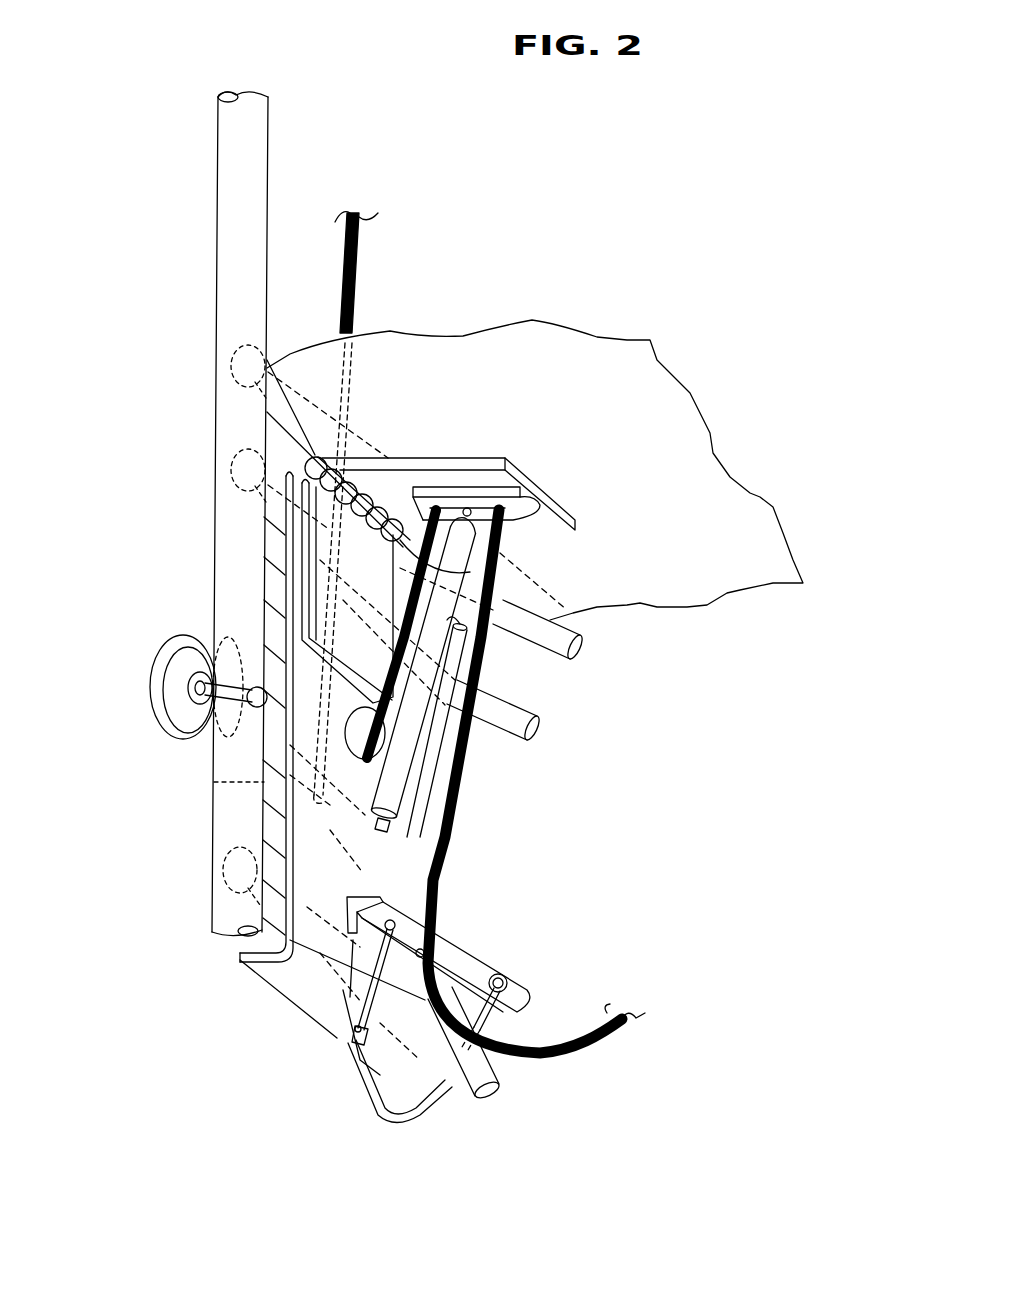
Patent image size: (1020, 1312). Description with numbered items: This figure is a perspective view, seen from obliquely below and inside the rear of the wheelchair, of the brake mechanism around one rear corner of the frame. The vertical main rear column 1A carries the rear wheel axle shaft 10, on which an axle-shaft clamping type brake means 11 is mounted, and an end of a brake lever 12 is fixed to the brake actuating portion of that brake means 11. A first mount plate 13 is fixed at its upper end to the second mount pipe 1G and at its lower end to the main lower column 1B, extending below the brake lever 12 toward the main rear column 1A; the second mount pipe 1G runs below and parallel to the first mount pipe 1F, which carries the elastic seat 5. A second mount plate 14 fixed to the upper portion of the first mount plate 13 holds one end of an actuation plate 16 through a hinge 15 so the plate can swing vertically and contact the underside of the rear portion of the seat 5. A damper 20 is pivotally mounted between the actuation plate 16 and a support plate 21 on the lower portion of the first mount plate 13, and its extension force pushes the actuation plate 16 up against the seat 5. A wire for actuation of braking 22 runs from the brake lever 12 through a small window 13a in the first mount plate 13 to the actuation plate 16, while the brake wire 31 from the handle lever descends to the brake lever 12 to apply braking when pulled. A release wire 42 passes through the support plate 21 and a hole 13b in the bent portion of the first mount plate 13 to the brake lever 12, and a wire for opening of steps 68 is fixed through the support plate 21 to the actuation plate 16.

The main rear column 1A is at (216, 250).
The main lower column 1B is at (473, 1093).
The first mount pipe 1F is at (590, 650).
The second mount pipe 1G is at (540, 735).
The seat 5 is at (613, 357).
The axle shaft 10 is at (190, 692).
The brake means 11 is at (160, 672).
The brake lever 12 is at (460, 948).
The first mount plate 13 is at (307, 863).
The small window 13a is at (214, 782).
The hole 13b is at (360, 1052).
The second mount plate 14 is at (310, 598).
The hinge 15 is at (322, 518).
The actuation plate 16 is at (430, 465).
The damper 20 is at (407, 727).
The support plate 21 is at (345, 1035).
The wire for actuation of braking 22 is at (470, 572).
The brake wire 31 is at (354, 258).
The release wire 42 is at (370, 1117).
The wire for opening of steps 68 is at (573, 1057).